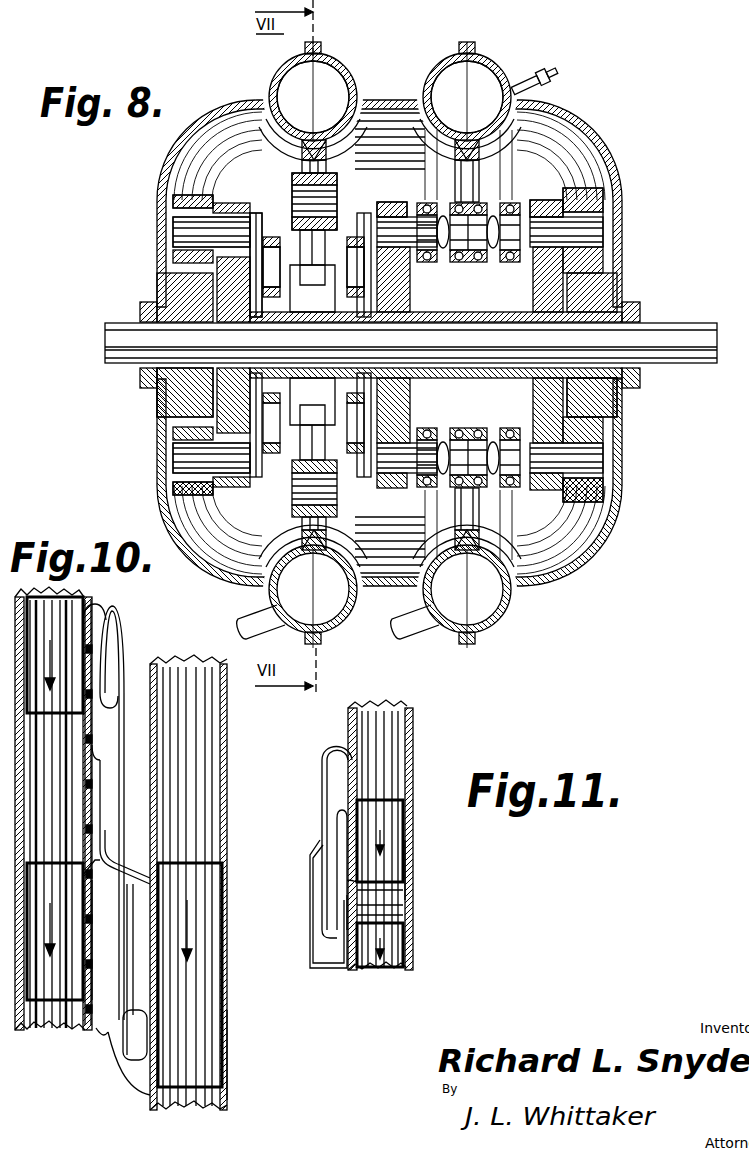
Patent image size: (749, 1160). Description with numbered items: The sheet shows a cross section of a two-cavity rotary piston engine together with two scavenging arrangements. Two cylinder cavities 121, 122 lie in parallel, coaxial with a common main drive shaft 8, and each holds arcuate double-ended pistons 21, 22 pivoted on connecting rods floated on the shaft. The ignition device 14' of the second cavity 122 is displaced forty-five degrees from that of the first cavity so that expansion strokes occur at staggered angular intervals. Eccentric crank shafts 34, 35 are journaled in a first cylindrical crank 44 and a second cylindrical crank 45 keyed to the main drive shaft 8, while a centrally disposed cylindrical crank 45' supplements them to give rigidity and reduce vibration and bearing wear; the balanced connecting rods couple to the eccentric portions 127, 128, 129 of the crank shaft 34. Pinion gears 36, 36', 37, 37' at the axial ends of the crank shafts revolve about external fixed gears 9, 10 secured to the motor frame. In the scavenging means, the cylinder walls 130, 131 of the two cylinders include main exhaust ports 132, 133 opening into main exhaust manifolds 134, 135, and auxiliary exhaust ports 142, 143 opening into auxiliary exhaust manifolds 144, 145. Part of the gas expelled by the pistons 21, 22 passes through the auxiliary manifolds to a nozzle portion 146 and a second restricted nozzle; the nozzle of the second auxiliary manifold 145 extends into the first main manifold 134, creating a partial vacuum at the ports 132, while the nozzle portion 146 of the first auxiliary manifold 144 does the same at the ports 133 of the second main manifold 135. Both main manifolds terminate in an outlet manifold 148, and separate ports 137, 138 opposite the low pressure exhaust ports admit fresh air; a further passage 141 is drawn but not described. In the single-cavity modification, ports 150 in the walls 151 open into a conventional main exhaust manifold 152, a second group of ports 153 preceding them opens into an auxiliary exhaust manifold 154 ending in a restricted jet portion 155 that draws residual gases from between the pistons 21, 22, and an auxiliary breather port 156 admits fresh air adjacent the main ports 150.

In FIG. 8, the main drive shaft 8 is at (668, 330).
In FIG. 8, the external fixed gear 9 is at (183, 403).
In FIG. 8, the external fixed gear 10 is at (614, 395).
In FIG. 8, the ignition device 14' is at (549, 69).
In FIG. 8, the crank shaft 34 is at (197, 240).
In FIG. 8, the crank shaft 35 is at (187, 458).
In FIG. 8, the pinion gear 36 is at (579, 506).
In FIG. 8, the pinion gear 36' is at (584, 186).
In FIG. 8, the pinion gear 37 is at (198, 506).
In FIG. 8, the pinion gear 37' is at (170, 188).
In FIG. 8, the first cylindrical crank 44 is at (223, 207).
In FIG. 8, the second cylindrical crank 45 is at (546, 189).
In FIG. 8, the centrally disposed cylindrical crank 45' is at (396, 192).
In FIG. 8, the cylinder cavity 121 is at (328, 83).
In FIG. 8, the cylinder cavity 122 is at (480, 80).
In FIG. 8, the eccentric portion 127 is at (256, 272).
In FIG. 8, the eccentric portion 128 is at (352, 275).
In FIG. 8, the eccentric portion 129 is at (292, 178).
In FIG. 10, the piston 21 is at (55, 655).
In FIG. 11, the piston 21 is at (407, 817).
In FIG. 10, the piston 22 is at (55, 931).
In FIG. 11, the piston 22 is at (410, 957).
In FIG. 10, the cylinder walls 130 is at (97, 604).
In FIG. 10, the cylinder walls 131 is at (103, 780).
In FIG. 10, the main exhaust ports 132 is at (127, 720).
In FIG. 10, the main exhaust ports 133 is at (190, 980).
In FIG. 10, the main exhaust manifold 134 is at (95, 777).
In FIG. 10, the main exhaust manifold 135 is at (133, 920).
In FIG. 10, the separate port 137 is at (66, 874).
In FIG. 10, the separate port 138 is at (226, 1016).
In FIG. 10, the flow channel 141 is at (72, 940).
In FIG. 10, the auxiliary exhaust ports 142 is at (90, 630).
In FIG. 10, the auxiliary exhaust ports 143 is at (162, 870).
In FIG. 10, the auxiliary exhaust manifold 144 is at (97, 660).
In FIG. 10, the auxiliary exhaust manifold 145 is at (110, 812).
In FIG. 10, the nozzle portion 146 is at (143, 1043).
In FIG. 10, the outlet manifold 148 is at (108, 1035).
In FIG. 11, the ports 150 is at (357, 900).
In FIG. 11, the walls 151 is at (410, 850).
In FIG. 11, the main exhaust manifold 152 is at (327, 960).
In FIG. 11, the second group of ports 153 is at (353, 752).
In FIG. 11, the auxiliary exhaust manifold 154 is at (325, 773).
In FIG. 11, the restricted jet portion 155 is at (330, 930).
In FIG. 11, the auxiliary breather port 156 is at (413, 898).